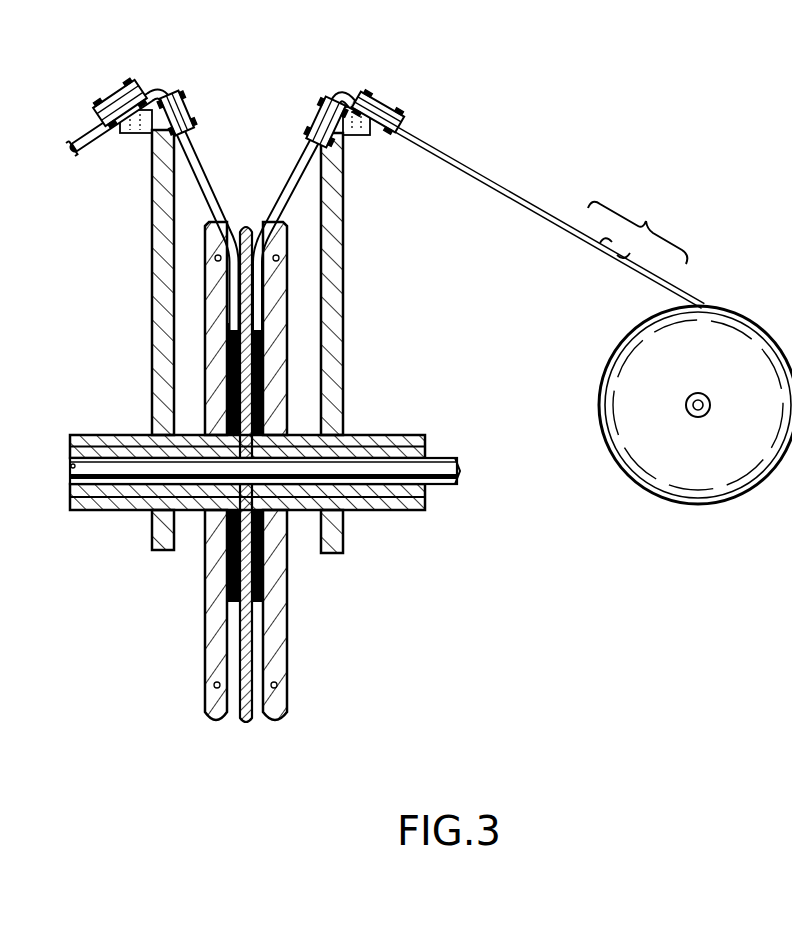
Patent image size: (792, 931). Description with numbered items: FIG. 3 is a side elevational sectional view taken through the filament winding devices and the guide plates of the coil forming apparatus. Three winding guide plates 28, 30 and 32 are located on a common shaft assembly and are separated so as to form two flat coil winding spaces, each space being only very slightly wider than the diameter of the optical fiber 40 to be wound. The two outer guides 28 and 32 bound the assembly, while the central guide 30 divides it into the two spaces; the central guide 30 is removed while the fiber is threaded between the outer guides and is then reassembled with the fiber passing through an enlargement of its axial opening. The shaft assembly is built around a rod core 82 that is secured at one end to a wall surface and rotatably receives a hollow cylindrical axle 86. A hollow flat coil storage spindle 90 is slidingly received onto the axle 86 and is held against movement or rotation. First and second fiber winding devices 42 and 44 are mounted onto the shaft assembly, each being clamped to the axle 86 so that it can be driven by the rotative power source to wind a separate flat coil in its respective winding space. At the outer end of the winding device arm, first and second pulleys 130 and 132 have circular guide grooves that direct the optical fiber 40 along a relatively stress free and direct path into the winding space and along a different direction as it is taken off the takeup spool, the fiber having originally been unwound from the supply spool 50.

The winding guide plate 28 is at (287, 393).
The central winding guide plate 30 is at (254, 225).
The winding guide plate 32 is at (217, 368).
The optical fiber 40 is at (527, 205).
The first fiber winding device 42 is at (360, 290).
The second fiber winding device 44 is at (110, 74).
The supply spool 50 is at (667, 473).
The rod core 82 is at (440, 488).
The hollow cylindrical axle 86 is at (110, 490).
The flat coil storage spindle 90 is at (103, 437).
The first pulley 130 is at (400, 110).
The second pulley 132 is at (313, 107).